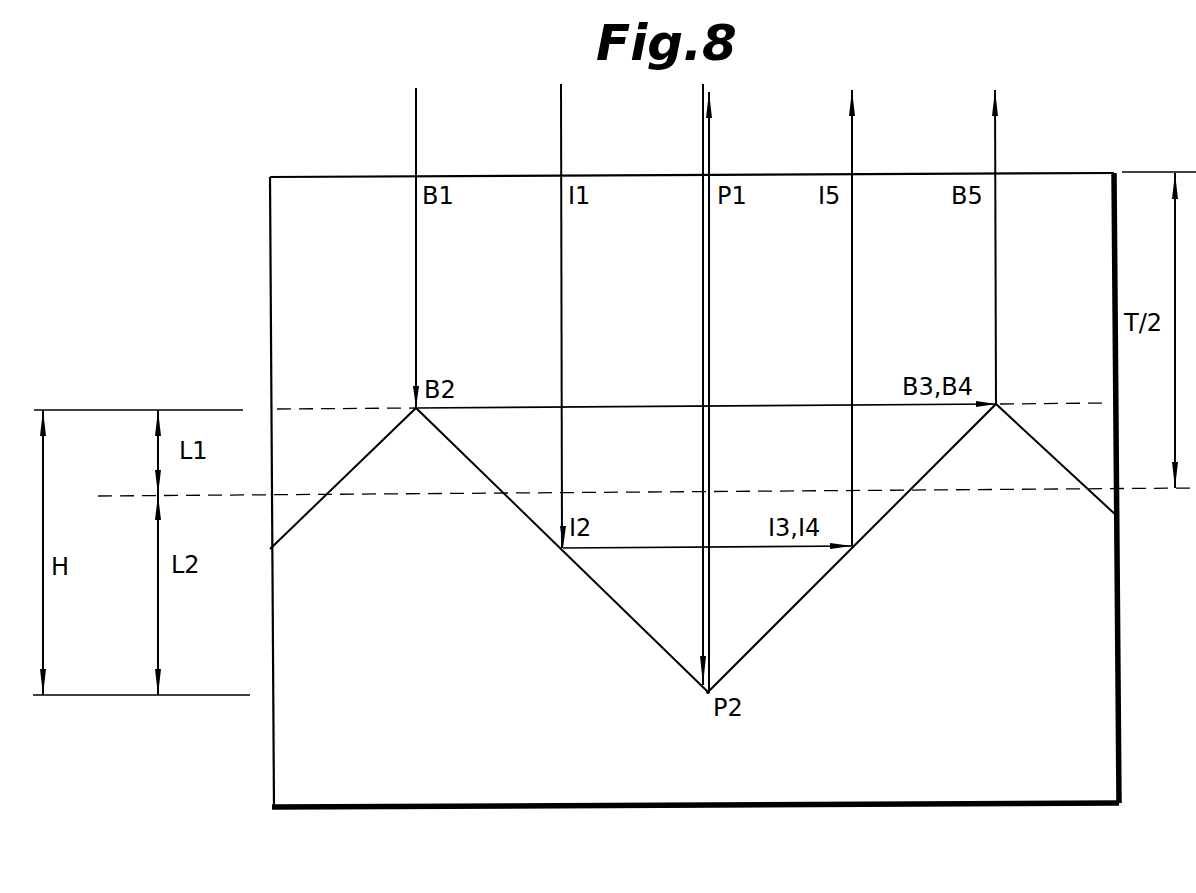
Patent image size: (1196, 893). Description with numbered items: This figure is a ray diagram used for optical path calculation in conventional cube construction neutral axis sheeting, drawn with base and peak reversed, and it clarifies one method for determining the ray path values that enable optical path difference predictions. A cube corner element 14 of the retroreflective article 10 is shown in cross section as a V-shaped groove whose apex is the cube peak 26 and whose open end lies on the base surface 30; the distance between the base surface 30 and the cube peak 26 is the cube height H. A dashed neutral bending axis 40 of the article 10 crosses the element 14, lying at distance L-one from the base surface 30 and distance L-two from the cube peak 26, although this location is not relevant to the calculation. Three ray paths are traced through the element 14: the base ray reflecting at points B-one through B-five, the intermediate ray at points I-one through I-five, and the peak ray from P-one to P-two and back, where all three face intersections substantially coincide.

The layered retroreflective article 10 is at (1119, 612).
The cube corner element 14 is at (812, 590).
The cube peak 26 is at (707, 695).
The base surface 30 is at (356, 408).
The neutral bending axis 40 is at (1144, 489).